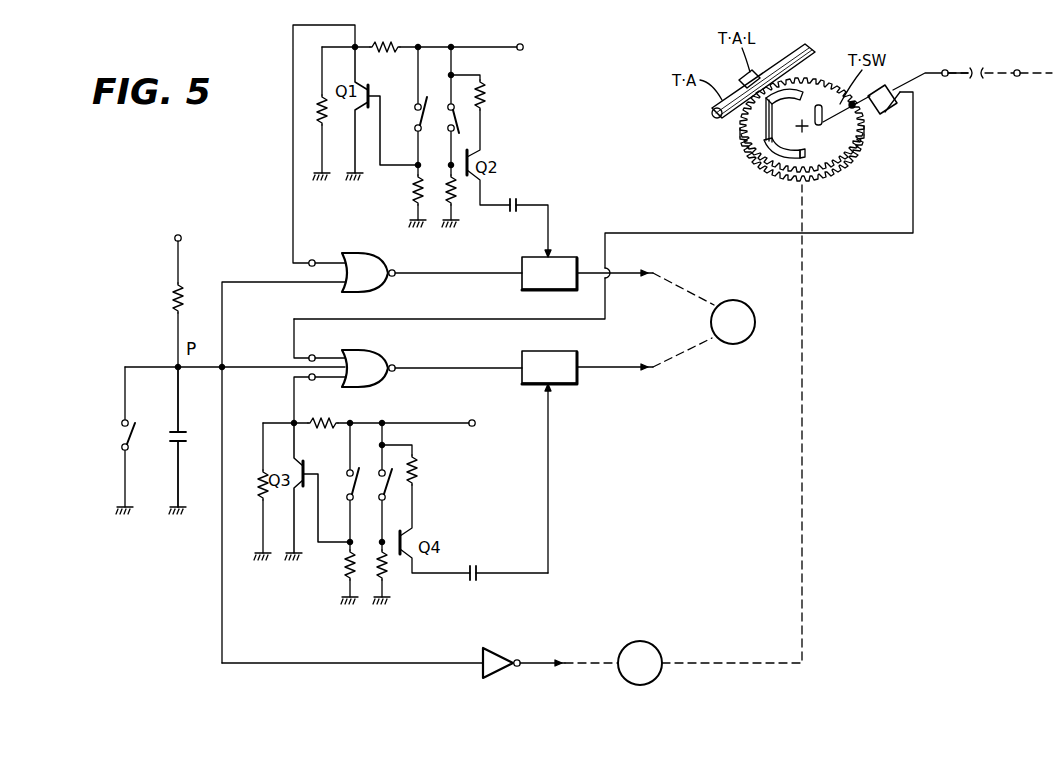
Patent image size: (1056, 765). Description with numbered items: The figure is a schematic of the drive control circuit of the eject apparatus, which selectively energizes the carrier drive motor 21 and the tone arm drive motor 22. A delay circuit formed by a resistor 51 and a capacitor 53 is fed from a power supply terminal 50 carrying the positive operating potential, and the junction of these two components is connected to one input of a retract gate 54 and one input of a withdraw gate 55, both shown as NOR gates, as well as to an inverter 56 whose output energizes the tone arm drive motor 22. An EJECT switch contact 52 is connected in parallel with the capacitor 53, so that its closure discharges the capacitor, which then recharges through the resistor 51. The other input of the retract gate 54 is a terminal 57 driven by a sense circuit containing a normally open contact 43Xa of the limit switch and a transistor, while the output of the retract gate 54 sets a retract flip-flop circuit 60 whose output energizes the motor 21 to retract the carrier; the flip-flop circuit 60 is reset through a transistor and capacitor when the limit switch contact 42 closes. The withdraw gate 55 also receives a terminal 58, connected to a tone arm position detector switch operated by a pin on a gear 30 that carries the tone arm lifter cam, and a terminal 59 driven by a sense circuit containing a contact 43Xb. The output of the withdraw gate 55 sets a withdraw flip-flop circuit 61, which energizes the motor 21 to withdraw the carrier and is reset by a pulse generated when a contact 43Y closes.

The carrier drive motor 21 is at (750, 338).
The tone arm drive motor 22 is at (657, 678).
The gear 30 is at (825, 160).
The limit switch 42 is at (460, 117).
The normally open contact 43Xa is at (410, 128).
The contact 43Xb is at (345, 492).
The contact 43Y is at (395, 487).
The power supply terminal 50 is at (521, 47).
The resistor 51 is at (173, 298).
The switch contact 52 is at (120, 437).
The capacitor 53 is at (186, 438).
The retract gate 54 is at (385, 290).
The withdraw gate 55 is at (380, 354).
The inverter 56 is at (500, 651).
The terminal 57 is at (314, 260).
The terminal 58 is at (314, 355).
The terminal 59 is at (313, 380).
The retract flip-flop circuit 60 is at (573, 257).
The withdraw flip-flop circuit 61 is at (577, 384).